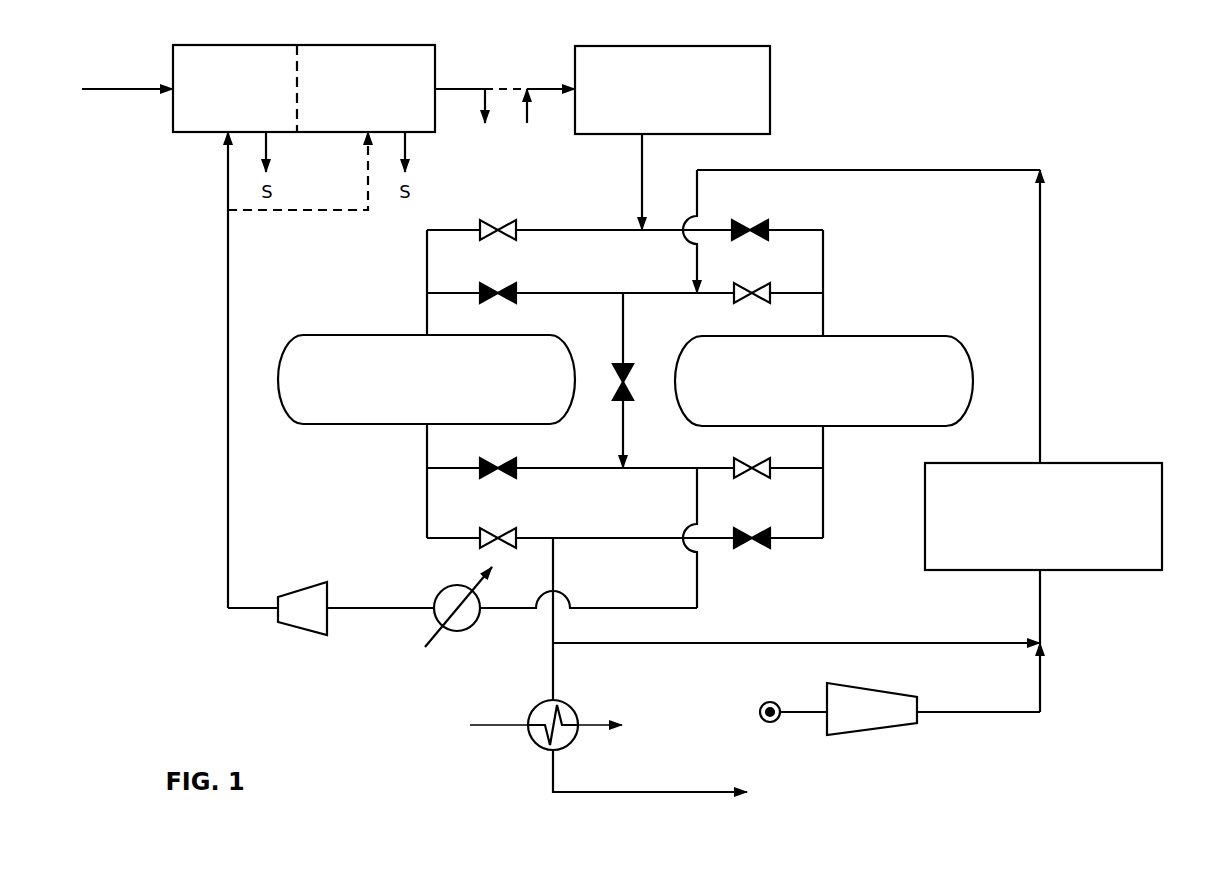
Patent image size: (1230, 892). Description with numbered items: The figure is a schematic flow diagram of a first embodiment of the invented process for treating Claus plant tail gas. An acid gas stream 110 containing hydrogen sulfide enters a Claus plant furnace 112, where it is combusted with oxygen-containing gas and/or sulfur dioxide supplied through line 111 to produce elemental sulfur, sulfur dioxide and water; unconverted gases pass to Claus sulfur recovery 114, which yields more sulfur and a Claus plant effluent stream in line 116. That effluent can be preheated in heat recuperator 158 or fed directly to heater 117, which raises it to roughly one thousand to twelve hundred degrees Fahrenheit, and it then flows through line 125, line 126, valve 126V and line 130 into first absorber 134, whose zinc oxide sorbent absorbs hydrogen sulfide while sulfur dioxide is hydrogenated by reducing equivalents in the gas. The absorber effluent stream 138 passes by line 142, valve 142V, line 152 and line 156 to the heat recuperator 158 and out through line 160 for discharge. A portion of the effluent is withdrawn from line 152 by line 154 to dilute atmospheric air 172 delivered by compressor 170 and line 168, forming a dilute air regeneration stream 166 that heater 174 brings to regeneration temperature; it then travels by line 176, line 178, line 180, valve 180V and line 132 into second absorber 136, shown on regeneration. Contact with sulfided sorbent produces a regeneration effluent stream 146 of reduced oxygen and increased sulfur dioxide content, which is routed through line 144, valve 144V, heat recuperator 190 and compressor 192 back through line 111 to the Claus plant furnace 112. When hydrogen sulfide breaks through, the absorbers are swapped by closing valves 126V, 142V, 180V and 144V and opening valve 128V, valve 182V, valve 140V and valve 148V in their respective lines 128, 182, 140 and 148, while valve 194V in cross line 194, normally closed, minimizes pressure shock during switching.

The acid gas stream 110 is at (120, 92).
The line 111 is at (228, 305).
The Claus plant furnace 112 is at (172, 77).
The Claus sulfur recovery 114 is at (437, 78).
The Claus plant effluent stream line 116 is at (437, 92).
The heater 117 is at (770, 110).
The line 125 is at (640, 183).
The line 126 is at (537, 228).
The valve 126V is at (510, 222).
The line 128 is at (707, 228).
The valve 128V is at (768, 223).
The line 130 is at (423, 273).
The line 132 is at (823, 252).
The first absorber 134 is at (372, 333).
The second absorber 136 is at (903, 337).
The absorber effluent stream 138 is at (427, 442).
The line 140 is at (438, 472).
The valve 140V is at (507, 458).
The line 142 is at (458, 543).
The valve 142V is at (523, 532).
The line 144 is at (807, 473).
The valve 144V is at (762, 462).
The regeneration effluent stream 146 is at (827, 442).
The line 148 is at (788, 540).
The valve 148V is at (752, 548).
The line 152 is at (550, 633).
The line 154 is at (640, 645).
The line 156 is at (550, 660).
The heat recuperator 158 is at (575, 735).
The line 160 is at (633, 788).
The dilute air regeneration stream 166 is at (1042, 633).
The line 168 is at (1042, 692).
The compressor 170 is at (873, 730).
The atmospheric air 172 is at (798, 708).
The heater 174 is at (1163, 518).
The line 176 is at (1040, 340).
The line 178 is at (893, 168).
The line 180 is at (702, 297).
The valve 180V is at (757, 287).
The line 182 is at (603, 295).
The valve 182V is at (495, 283).
The heat recuperator 190 is at (432, 620).
The compressor 192 is at (310, 633).
The line 194 is at (627, 413).
The valve 194V is at (635, 372).